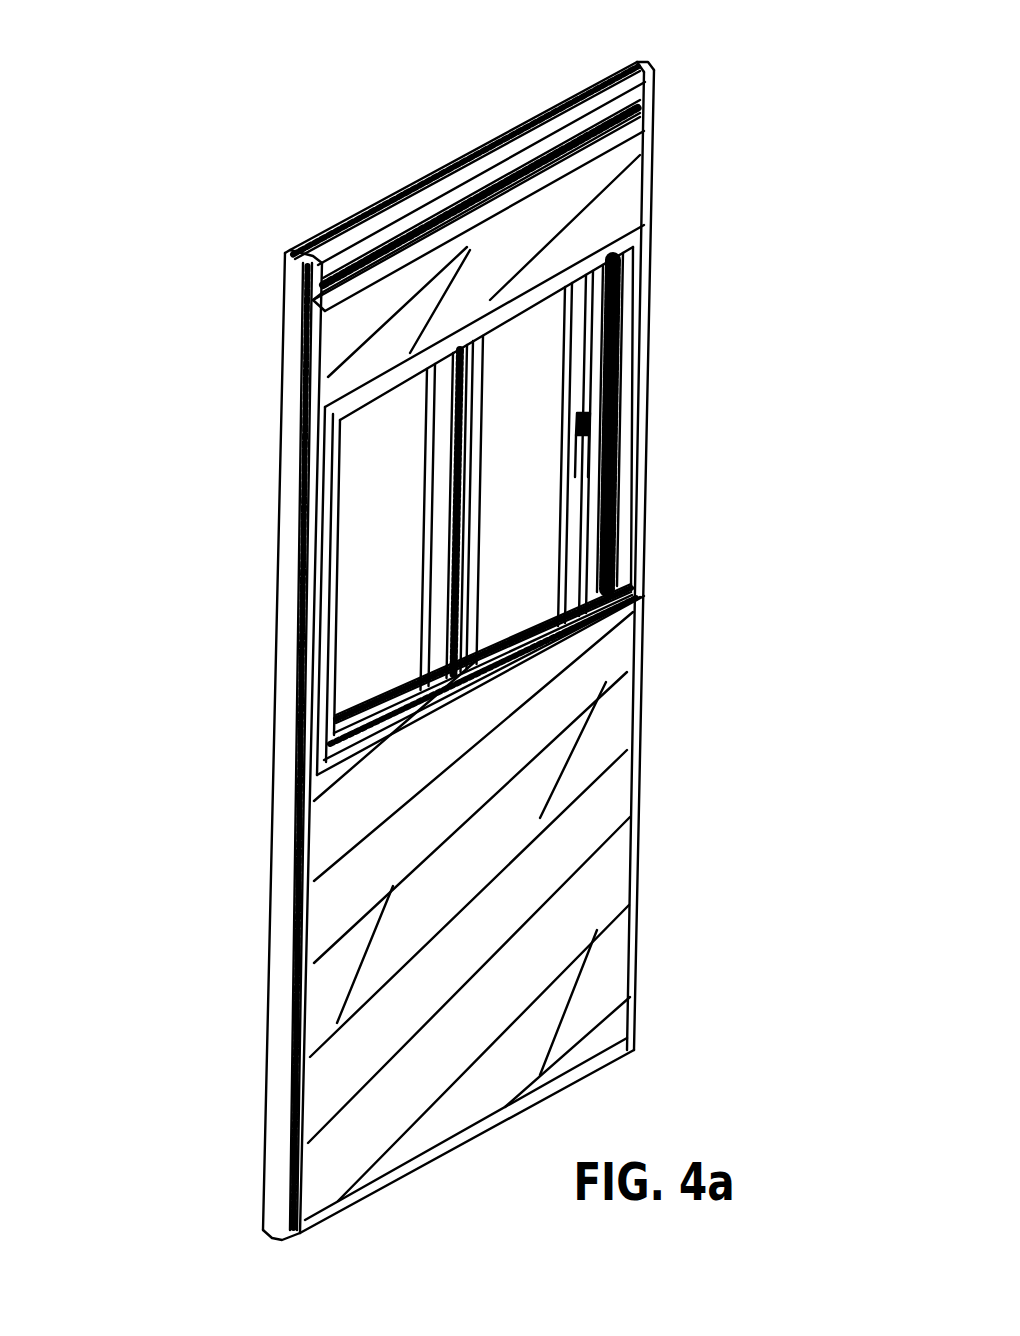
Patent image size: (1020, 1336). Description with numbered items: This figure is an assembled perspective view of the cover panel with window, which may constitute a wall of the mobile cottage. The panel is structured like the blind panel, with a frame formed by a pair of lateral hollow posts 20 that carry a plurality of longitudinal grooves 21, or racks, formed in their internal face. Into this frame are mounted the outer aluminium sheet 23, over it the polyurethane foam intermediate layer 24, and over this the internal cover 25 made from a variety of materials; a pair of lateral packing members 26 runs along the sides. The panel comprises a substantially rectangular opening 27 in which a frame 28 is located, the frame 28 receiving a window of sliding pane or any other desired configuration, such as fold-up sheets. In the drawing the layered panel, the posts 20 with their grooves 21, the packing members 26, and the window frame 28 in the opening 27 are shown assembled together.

The lateral hollow post 20 is at (458, 620).
The longitudinal groove 21 is at (218, 748).
The outer aluminium sheet 23 is at (400, 200).
The polyurethane foam intermediate layer 24 is at (598, 139).
The internal cover 25 is at (523, 880).
The lateral packing member 26 is at (284, 557).
The rectangular opening 27 is at (383, 583).
The frame 28 is at (624, 378).